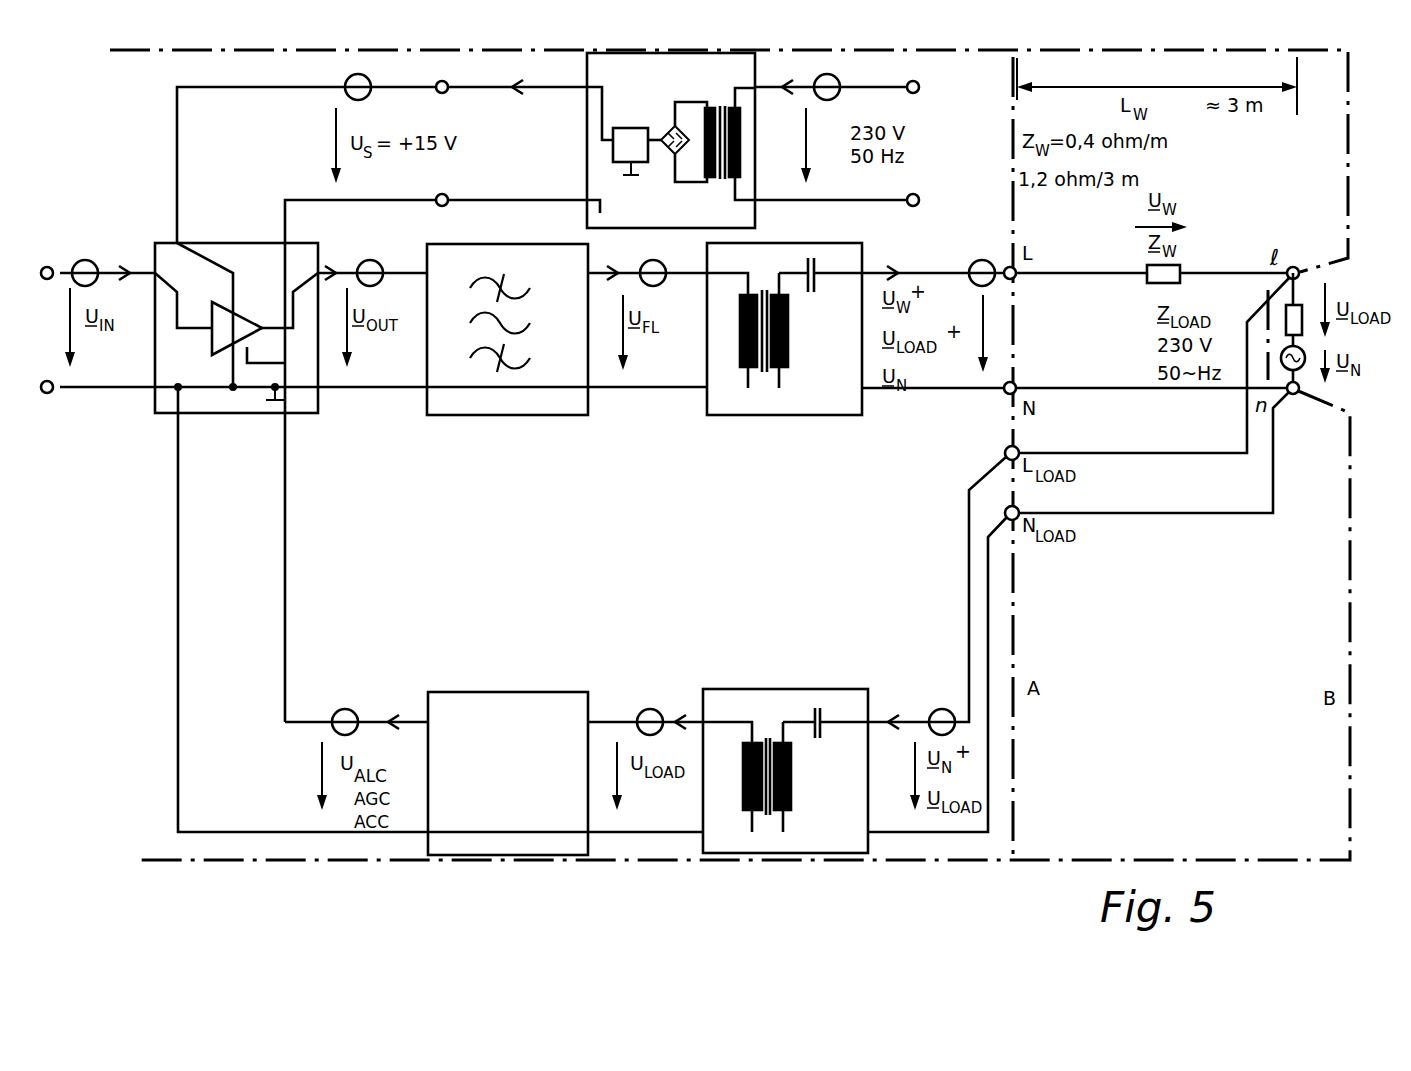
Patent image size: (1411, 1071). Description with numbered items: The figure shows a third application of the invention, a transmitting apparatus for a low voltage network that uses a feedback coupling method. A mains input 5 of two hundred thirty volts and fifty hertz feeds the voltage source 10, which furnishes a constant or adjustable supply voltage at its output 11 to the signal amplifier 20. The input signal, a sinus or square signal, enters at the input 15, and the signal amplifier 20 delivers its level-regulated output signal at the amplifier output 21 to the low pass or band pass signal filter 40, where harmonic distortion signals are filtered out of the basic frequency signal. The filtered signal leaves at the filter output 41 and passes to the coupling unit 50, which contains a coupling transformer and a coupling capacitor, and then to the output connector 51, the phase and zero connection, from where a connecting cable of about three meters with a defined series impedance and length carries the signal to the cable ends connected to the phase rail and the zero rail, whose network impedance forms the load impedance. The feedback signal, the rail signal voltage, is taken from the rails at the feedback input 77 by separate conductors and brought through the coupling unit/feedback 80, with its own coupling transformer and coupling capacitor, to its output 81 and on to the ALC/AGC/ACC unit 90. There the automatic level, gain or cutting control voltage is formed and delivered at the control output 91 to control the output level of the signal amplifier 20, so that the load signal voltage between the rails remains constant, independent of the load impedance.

The mains supply input terminal 5 is at (827, 75).
The voltage source 10 is at (671, 140).
The supply voltage output 11 is at (368, 75).
The signal input terminal 15 is at (94, 262).
The signal amplifier 20 is at (236, 328).
The amplifier output 21 is at (383, 262).
The signal filter 40 is at (507, 329).
The filter output 41 is at (665, 262).
The coupling unit 50 is at (784, 329).
The output connector 51 is at (981, 262).
The load voltage sensing input 77 is at (944, 711).
The coupling unit/feedback 80 is at (785, 771).
The feedback transformer output 81 is at (659, 711).
The ALC/AGC/ACC unit 90 is at (508, 773).
The control circuit output 91 is at (354, 711).